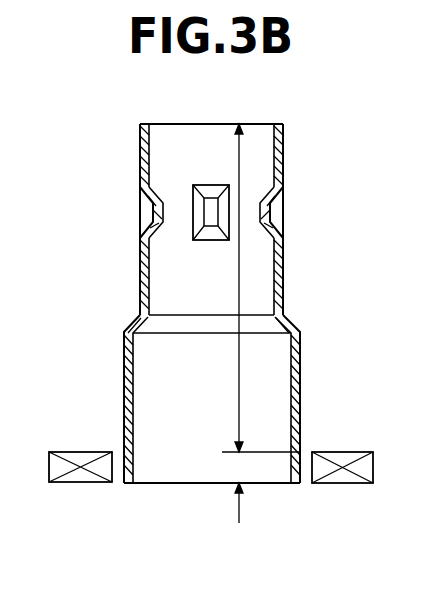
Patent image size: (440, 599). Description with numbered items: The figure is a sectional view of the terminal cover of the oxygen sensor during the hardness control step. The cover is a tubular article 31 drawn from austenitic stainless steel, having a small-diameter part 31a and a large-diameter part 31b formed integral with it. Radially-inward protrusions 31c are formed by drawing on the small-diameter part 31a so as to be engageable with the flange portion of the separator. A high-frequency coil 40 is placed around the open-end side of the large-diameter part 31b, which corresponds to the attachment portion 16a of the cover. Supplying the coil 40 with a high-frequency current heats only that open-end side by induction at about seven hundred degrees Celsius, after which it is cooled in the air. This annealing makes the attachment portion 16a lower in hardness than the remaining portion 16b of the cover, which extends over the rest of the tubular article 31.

The tubular article 31 is at (161, 355).
The small-diameter part 31a is at (140, 265).
The large-diameter part 31b is at (124, 392).
The radially-inward protrusions 31c is at (155, 212).
The attachment portion 16a is at (241, 469).
The remaining portion 16b is at (240, 270).
The high-frequency coil 40 is at (343, 478).